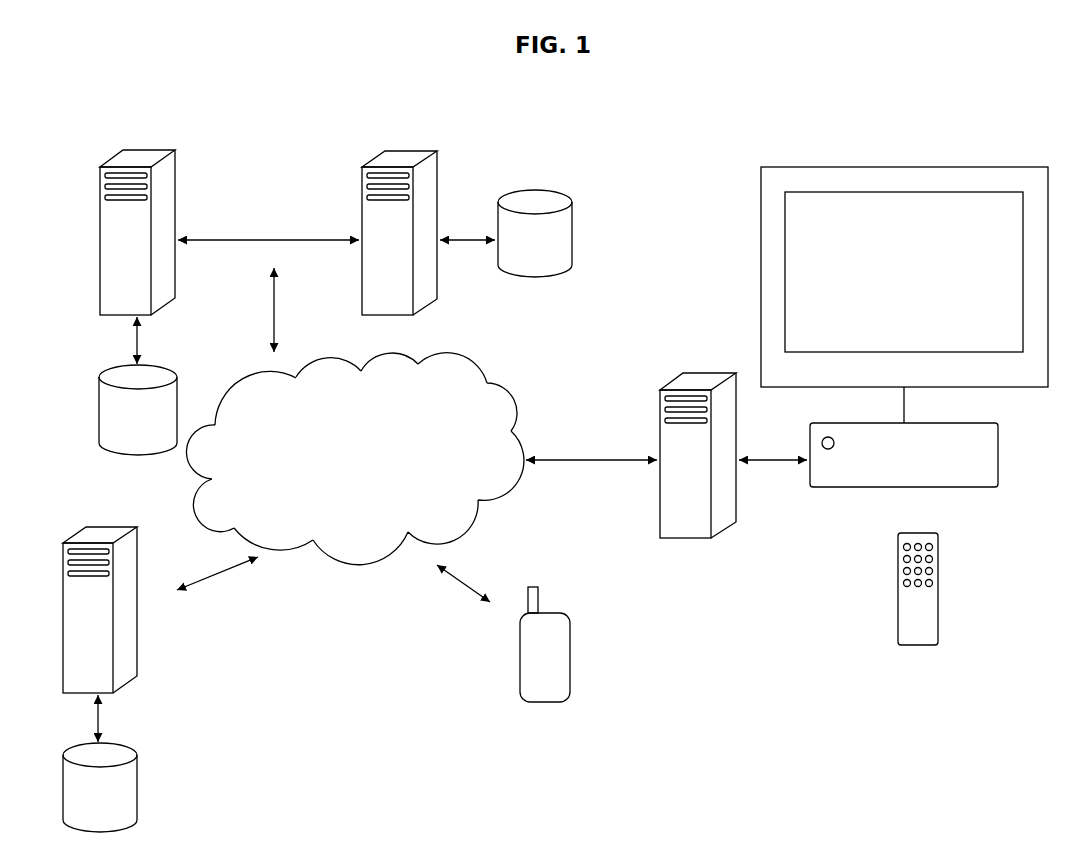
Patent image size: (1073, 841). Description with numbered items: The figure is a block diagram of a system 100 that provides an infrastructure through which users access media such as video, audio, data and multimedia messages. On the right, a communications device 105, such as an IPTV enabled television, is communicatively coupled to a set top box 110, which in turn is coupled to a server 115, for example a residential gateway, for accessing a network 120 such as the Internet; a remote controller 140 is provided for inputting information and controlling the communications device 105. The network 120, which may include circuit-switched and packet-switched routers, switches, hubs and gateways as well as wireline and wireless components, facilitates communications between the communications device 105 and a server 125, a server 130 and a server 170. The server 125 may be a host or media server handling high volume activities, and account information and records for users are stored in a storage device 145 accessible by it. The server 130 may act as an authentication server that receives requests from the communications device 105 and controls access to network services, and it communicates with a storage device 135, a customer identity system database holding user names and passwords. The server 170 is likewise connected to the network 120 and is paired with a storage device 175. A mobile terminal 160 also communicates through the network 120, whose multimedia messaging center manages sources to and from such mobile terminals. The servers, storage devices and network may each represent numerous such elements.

The system 100 is at (259, 124).
The communications device 105 is at (963, 334).
The set top box 110 is at (939, 480).
The server 115 is at (677, 516).
The network 120 is at (416, 511).
The server 125 is at (117, 294).
The server 130 is at (379, 309).
The storage device 135 is at (528, 267).
The remote controller 140 is at (922, 655).
The storage device 145 is at (126, 443).
The mobile terminal 160 is at (550, 702).
The server 170 is at (80, 660).
The storage device 175 is at (85, 811).